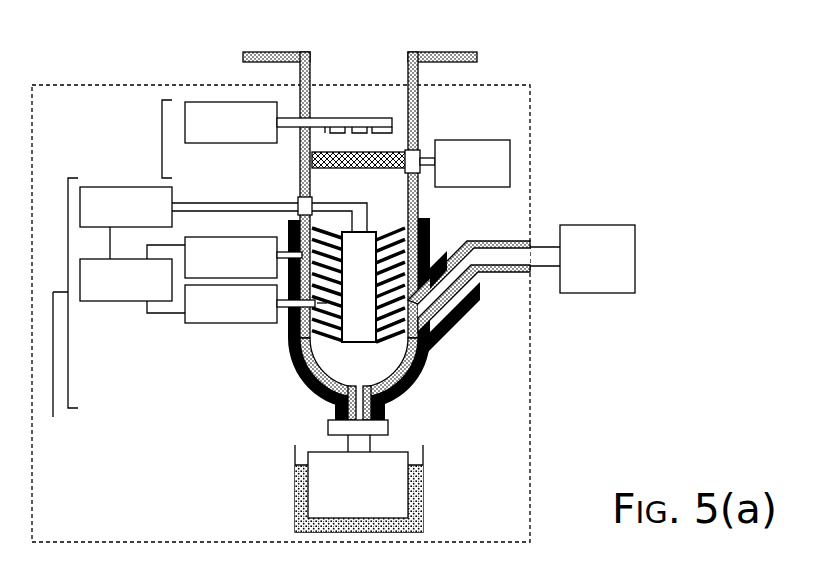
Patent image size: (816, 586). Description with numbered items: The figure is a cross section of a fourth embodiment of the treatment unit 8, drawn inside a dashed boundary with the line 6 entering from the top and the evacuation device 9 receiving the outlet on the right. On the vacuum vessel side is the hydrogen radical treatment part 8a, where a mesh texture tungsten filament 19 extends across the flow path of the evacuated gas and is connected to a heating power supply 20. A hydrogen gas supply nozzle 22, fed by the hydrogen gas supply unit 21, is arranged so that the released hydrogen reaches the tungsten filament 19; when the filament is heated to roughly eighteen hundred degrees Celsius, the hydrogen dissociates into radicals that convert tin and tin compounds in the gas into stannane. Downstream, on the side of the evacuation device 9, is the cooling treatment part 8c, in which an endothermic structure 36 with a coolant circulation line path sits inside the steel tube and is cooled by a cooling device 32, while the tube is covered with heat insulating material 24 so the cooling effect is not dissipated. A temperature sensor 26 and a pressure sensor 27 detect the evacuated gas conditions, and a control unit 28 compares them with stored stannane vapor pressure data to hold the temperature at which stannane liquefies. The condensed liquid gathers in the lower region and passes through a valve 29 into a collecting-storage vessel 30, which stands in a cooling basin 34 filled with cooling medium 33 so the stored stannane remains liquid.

The gas supply pipe 6 is at (384, 54).
The treatment unit 8 is at (531, 107).
The hydrogen radical treatment part 8a is at (162, 140).
The cooling treatment part 8c is at (59, 309).
The evacuation device 9 is at (521, 278).
The tungsten filament 19 is at (325, 148).
The heating power supply 20 is at (457, 163).
The hydrogen gas supply unit 21 is at (288, 122).
The hydrogen gas supply nozzle 22 is at (375, 112).
The heat insulating material 24 is at (302, 378).
The temperature sensor 26 is at (256, 304).
The pressure sensor 27 is at (243, 257).
The control unit 28 is at (132, 270).
The valve 29 is at (392, 427).
The collecting-storage vessel 30 is at (398, 474).
The cooling device 32 is at (223, 209).
The cooling medium 33 is at (417, 498).
The cooling basin 34 is at (425, 518).
The endothermic structure 36 is at (352, 343).